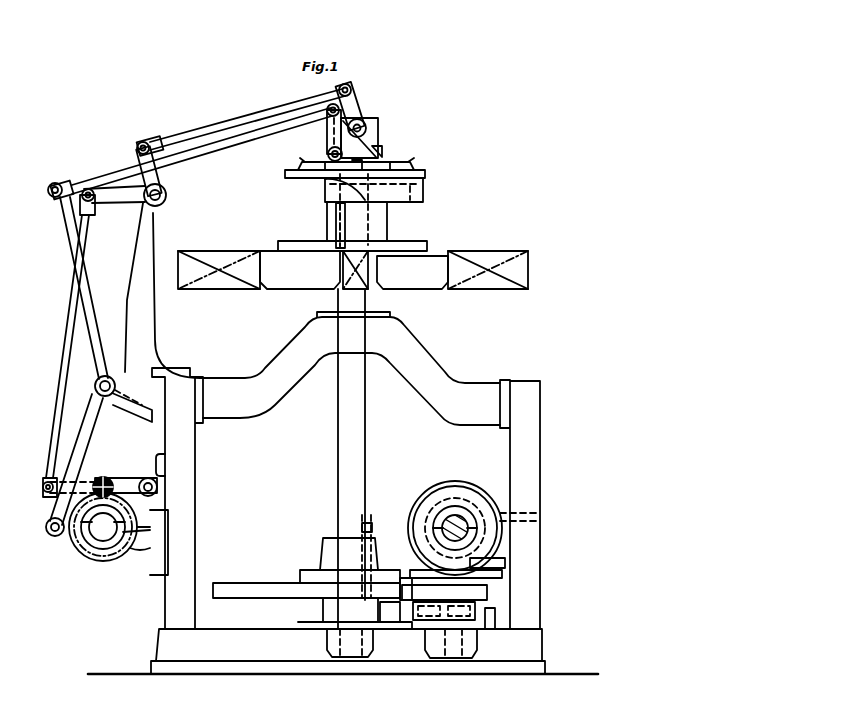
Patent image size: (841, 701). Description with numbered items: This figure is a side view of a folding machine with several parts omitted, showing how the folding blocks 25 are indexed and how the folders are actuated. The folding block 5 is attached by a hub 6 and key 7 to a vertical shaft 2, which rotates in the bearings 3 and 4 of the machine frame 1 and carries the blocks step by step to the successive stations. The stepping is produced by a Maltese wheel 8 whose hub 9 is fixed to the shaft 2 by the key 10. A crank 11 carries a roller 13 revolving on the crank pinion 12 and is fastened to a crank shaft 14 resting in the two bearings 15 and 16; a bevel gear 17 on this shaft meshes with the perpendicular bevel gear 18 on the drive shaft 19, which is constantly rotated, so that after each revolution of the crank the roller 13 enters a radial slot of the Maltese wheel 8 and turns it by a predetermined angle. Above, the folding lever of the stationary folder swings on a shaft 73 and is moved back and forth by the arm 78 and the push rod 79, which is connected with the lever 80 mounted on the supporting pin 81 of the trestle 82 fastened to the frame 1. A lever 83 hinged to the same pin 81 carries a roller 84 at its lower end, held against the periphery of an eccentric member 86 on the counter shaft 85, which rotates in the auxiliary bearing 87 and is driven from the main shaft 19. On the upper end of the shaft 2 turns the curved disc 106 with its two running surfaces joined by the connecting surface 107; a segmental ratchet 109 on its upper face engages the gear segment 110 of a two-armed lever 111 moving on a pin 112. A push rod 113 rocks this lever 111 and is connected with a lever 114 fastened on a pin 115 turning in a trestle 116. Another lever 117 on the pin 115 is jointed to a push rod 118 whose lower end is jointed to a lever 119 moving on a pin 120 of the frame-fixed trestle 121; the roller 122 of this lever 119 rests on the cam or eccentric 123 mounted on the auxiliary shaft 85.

The machine frame 1 is at (452, 383).
The vertical shaft 2 is at (353, 427).
The bearing 3 is at (378, 314).
The bearing 4 is at (312, 620).
The folding block 5 is at (395, 246).
The hub 6 is at (375, 228).
The key 7 is at (335, 223).
The Maltese wheel 8 is at (278, 583).
The hub 9 is at (377, 553).
The key 10 is at (367, 520).
The crank 11 is at (418, 624).
The crank pinion 12 is at (406, 578).
The roller 13 is at (414, 594).
The crank shaft 14 is at (476, 608).
The bearing 15 is at (500, 561).
The bearing 16 is at (487, 626).
The bevel gear 17 is at (498, 575).
The bevel gear 18 is at (456, 498).
The drive shaft 19 is at (462, 522).
The folding blocks 25 is at (238, 252).
The shaft 73 is at (328, 154).
The arm 78 is at (327, 138).
The push rod 79 is at (226, 142).
The lever 80 is at (87, 300).
The supporting pin 81 is at (95, 387).
The trestle 82 is at (139, 405).
The lever 83 is at (92, 415).
The roller 84 is at (46, 522).
The counter shaft 85 is at (88, 556).
The eccentric member 86 is at (66, 538).
The auxiliary bearing 87 is at (142, 555).
The curved disc 106 is at (424, 179).
The connecting surface 107 is at (328, 188).
The segmental ratchet 109 is at (404, 164).
The gear segment 110 is at (380, 153).
The two-armed lever 111 is at (349, 105).
The pin 112 is at (372, 131).
The push rod 113 is at (247, 120).
The lever 114 is at (157, 178).
The pin 115 is at (167, 201).
The trestle 116 is at (145, 306).
The lever 117 is at (128, 206).
The push rod 118 is at (70, 338).
The lever 119 is at (126, 478).
The pin 120 is at (158, 488).
The trestle 121 is at (158, 462).
The roller 122 is at (103, 477).
The eccentric 123 is at (135, 515).